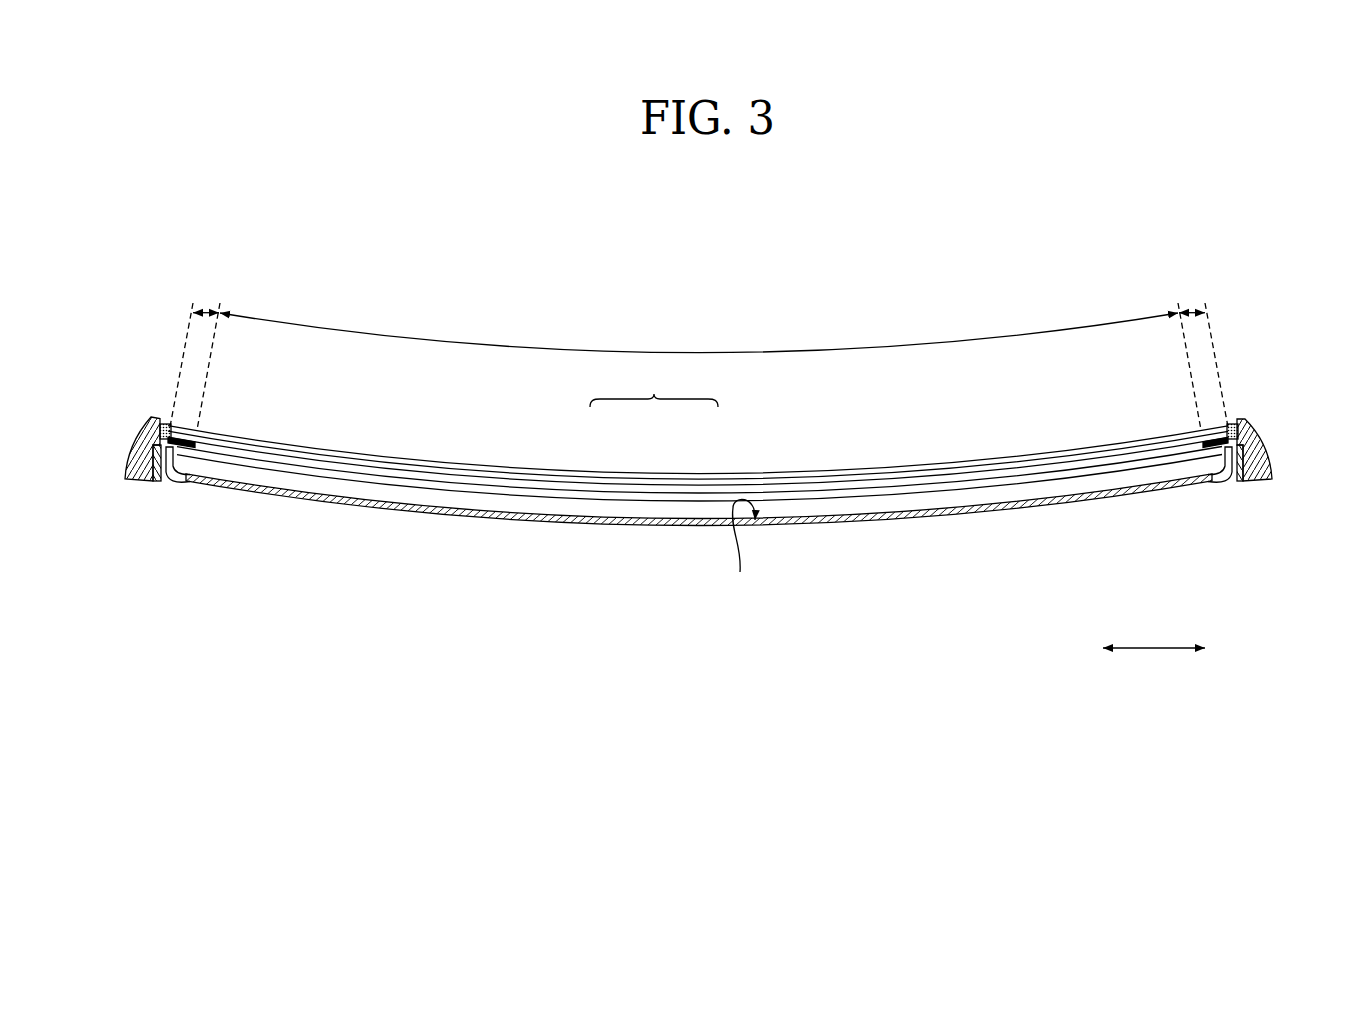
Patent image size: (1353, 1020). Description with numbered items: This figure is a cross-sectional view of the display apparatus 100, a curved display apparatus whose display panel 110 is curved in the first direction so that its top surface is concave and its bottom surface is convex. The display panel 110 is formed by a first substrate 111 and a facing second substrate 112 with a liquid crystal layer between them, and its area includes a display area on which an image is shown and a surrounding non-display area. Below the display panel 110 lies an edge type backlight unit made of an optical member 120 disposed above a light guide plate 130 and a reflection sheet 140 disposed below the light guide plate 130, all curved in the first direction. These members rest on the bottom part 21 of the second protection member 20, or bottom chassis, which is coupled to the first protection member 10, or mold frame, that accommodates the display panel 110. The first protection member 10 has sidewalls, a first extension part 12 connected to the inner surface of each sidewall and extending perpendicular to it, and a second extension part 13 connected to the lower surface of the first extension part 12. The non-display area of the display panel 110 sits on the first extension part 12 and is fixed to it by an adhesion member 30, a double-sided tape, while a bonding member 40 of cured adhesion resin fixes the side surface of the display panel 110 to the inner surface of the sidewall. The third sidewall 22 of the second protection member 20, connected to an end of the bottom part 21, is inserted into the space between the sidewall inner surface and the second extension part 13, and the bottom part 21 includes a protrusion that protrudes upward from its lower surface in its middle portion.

The display apparatus 100 is at (1028, 272).
The display panel 110 is at (862, 407).
The first substrate 111 is at (780, 478).
The second substrate 112 is at (837, 473).
The optical member 120 is at (693, 498).
The light guide plate 130 is at (645, 510).
The reflection sheet 140 is at (596, 518).
The first protection member 10 is at (1322, 552).
The first extension part 12 is at (1215, 476).
The second extension part 13 is at (1231, 470).
The second protection member 20 is at (182, 552).
The bottom part 21 is at (155, 483).
The third sidewall 22 is at (132, 482).
The adhesion member 30 is at (1208, 432).
The bonding member 40 is at (1228, 427).